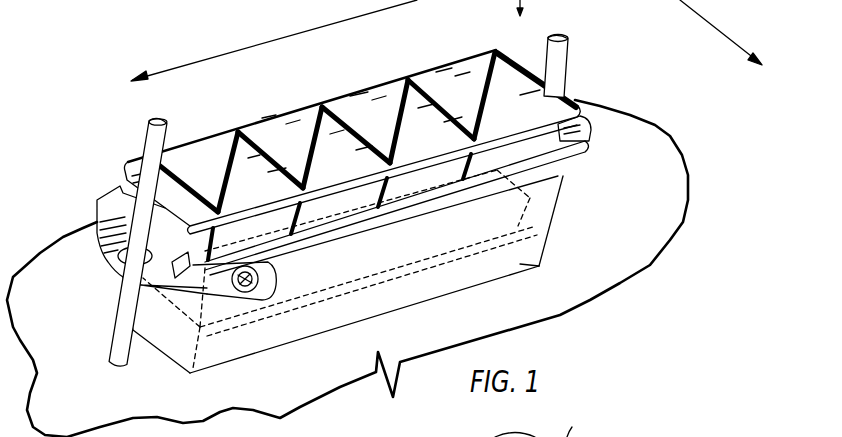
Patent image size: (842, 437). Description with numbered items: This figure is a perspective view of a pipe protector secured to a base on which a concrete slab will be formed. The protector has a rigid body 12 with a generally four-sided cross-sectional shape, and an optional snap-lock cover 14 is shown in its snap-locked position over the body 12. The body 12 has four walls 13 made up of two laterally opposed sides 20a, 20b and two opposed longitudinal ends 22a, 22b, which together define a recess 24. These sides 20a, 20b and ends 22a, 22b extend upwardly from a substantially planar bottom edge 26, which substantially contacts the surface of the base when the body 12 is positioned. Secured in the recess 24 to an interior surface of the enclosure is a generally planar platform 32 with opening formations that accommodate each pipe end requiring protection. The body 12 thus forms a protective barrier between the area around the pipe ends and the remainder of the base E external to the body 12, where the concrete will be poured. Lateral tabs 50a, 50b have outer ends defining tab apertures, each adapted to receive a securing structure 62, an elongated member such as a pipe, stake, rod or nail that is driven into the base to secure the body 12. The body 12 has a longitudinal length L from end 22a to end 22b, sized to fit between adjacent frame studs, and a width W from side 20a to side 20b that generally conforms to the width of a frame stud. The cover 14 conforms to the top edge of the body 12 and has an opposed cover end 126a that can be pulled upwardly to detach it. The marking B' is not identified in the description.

The body 12 is at (556, 229).
The walls 13 is at (512, 261).
The snap-lock cover 14 is at (193, 134).
The body side 20a is at (398, 294).
The body side 20b is at (322, 106).
The longitudinal end 22a is at (567, 204).
The longitudinal end 22b is at (175, 347).
The recess 24 is at (441, 250).
The bottom edge 26 is at (283, 343).
The platform 32 is at (250, 348).
The lateral tab 50a is at (578, 116).
The lateral tab 50b is at (118, 240).
The securing structure 62 is at (148, 138).
The cover end 126a is at (572, 427).
The longitudinal length L is at (155, 80).
The width W is at (698, 6).
The remainder of the base E is at (673, 158).
The base width B' is at (355, 344).